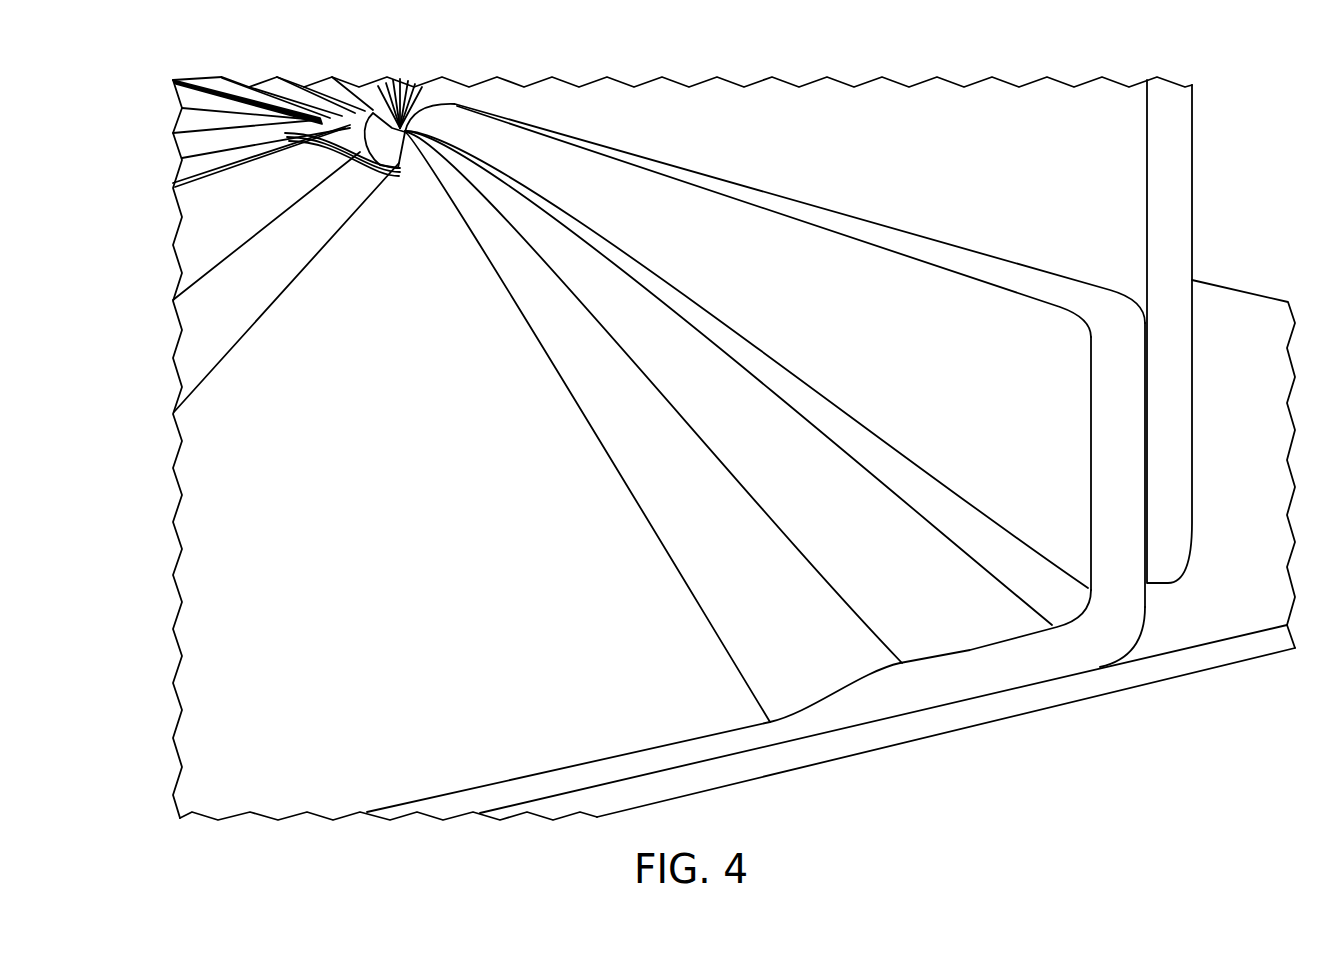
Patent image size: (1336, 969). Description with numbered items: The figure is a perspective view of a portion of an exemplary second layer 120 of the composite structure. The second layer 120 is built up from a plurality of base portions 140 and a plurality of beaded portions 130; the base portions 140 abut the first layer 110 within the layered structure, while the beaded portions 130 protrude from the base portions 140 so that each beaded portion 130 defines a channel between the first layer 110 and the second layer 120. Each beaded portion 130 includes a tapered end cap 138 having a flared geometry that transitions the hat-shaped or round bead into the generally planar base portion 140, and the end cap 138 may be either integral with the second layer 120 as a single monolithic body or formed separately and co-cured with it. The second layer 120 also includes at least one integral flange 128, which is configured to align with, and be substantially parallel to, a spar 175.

The first layer 110 is at (1062, 700).
The second layer 120 is at (903, 700).
The integral flange 128 is at (1143, 600).
The beaded portion 130 is at (180, 250).
The tapered end cap 138 is at (368, 117).
The base portion 140 is at (218, 806).
The spar 175 is at (1185, 142).